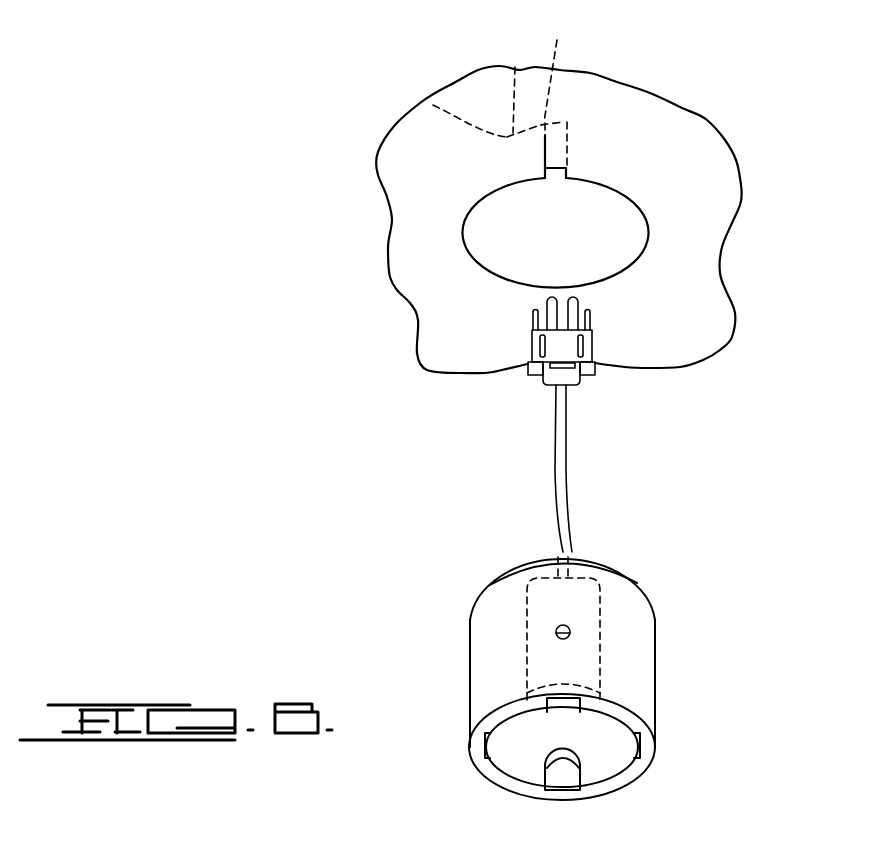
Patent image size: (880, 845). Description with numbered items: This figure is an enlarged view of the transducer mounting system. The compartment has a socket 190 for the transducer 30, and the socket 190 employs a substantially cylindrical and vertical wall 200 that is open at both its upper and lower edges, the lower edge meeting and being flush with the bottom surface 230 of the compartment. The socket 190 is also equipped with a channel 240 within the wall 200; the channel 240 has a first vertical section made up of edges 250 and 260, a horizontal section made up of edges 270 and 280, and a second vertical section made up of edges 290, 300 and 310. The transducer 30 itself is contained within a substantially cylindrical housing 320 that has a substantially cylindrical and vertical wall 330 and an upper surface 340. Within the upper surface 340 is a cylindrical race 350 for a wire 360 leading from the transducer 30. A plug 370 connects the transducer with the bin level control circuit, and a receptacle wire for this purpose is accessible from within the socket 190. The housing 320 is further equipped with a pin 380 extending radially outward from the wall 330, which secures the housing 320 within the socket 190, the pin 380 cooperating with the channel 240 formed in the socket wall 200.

The socket 190 is at (283, 161).
The wall 200 is at (652, 225).
The bottom surface 230 is at (720, 350).
The channel 240 is at (572, 116).
The edge 250 is at (533, 160).
The edge 260 is at (570, 163).
The edge 270 is at (536, 145).
The edge 280 is at (567, 68).
The edge 290 is at (515, 60).
The edge 300 is at (433, 105).
The edge 310 is at (518, 144).
The housing 320 is at (666, 669).
The wall 330 is at (657, 720).
The upper surface 340 is at (532, 550).
The cylindrical race 350 is at (578, 543).
The wire 360 is at (555, 452).
The plug 370 is at (575, 385).
The pin 380 is at (570, 628).
The transducer 30 is at (523, 615).